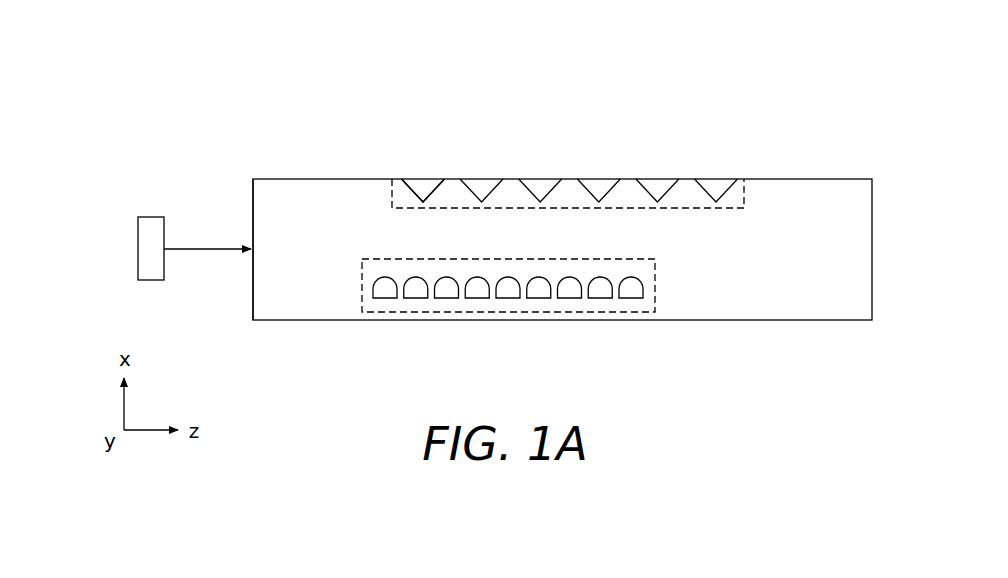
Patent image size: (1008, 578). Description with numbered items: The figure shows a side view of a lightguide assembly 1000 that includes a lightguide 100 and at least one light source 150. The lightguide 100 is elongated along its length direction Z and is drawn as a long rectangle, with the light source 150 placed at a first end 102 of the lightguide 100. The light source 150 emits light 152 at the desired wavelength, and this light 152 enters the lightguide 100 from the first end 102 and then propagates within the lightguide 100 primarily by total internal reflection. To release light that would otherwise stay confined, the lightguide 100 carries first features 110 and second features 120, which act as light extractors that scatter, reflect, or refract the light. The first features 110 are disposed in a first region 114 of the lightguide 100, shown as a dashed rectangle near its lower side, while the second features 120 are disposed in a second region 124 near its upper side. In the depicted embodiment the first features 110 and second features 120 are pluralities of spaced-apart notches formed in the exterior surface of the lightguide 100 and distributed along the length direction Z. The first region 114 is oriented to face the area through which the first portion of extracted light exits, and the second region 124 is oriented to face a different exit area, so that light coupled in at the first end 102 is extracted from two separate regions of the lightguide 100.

The lightguide assembly 1000 is at (266, 68).
The lightguide 100 is at (800, 178).
The first end 102 is at (253, 300).
The first features 110 is at (385, 291).
The first region 114 is at (657, 292).
The second features 120 is at (716, 186).
The second region 124 is at (394, 198).
The light source 150 is at (138, 248).
The light 152 is at (197, 247).